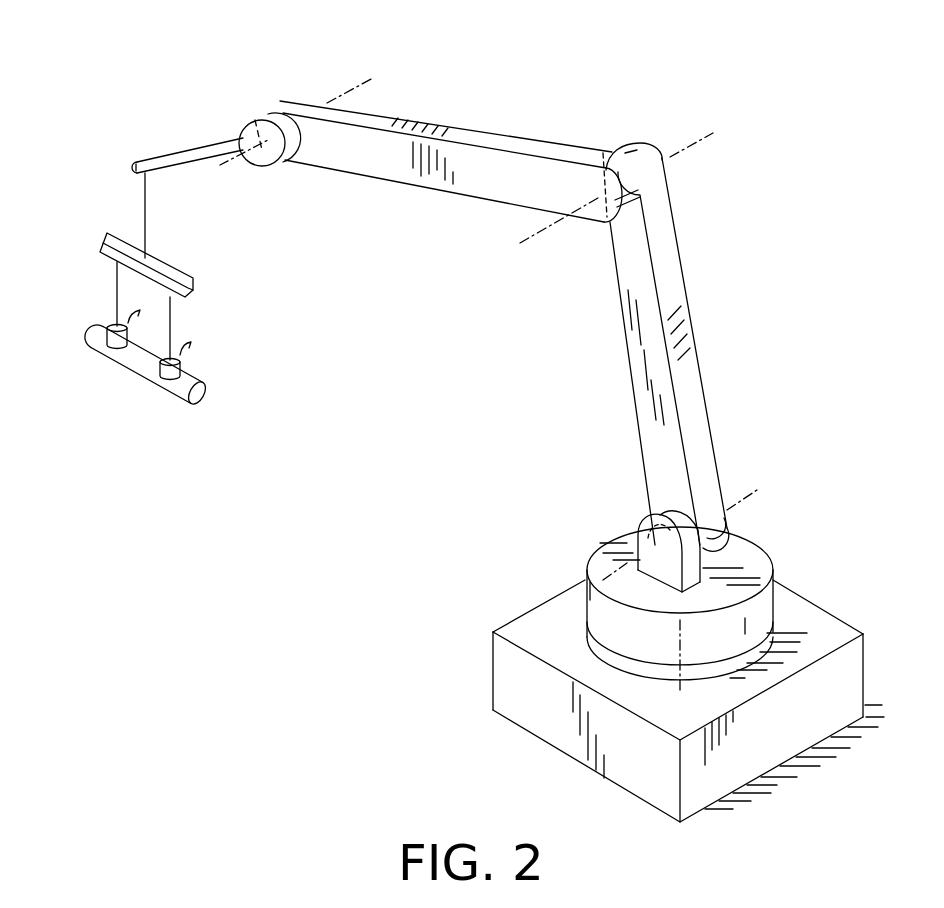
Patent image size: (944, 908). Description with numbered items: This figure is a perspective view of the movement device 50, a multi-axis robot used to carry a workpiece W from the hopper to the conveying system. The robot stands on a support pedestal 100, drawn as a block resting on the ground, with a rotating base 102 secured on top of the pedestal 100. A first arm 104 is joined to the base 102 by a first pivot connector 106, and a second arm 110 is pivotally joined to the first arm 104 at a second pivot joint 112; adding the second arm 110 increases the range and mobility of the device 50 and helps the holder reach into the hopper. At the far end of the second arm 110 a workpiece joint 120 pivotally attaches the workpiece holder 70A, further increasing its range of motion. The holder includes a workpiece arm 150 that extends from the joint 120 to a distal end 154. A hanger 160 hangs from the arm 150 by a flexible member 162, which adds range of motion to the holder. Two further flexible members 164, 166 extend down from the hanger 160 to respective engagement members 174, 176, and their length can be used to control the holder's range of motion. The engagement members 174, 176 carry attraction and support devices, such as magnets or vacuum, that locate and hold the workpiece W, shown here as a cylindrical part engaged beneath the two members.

The movement device 50 is at (609, 109).
The support pedestal 100 is at (758, 755).
The rotating base 102 is at (597, 610).
The first arm 104 is at (688, 290).
The first pivot connector 106 is at (648, 532).
The second arm 110 is at (458, 135).
The second pivot joint 112 is at (602, 208).
The workpiece joint 120 is at (263, 125).
The workpiece arm 150 is at (211, 139).
The distal end 154 is at (125, 165).
The hanger 160 is at (170, 268).
The flexible member 162 is at (148, 212).
The flexible member 164 is at (115, 282).
The flexible member 166 is at (172, 333).
The engagement member 174 is at (110, 348).
The engagement member 176 is at (173, 378).
The end effector 70A is at (162, 120).
The workpiece W is at (138, 370).